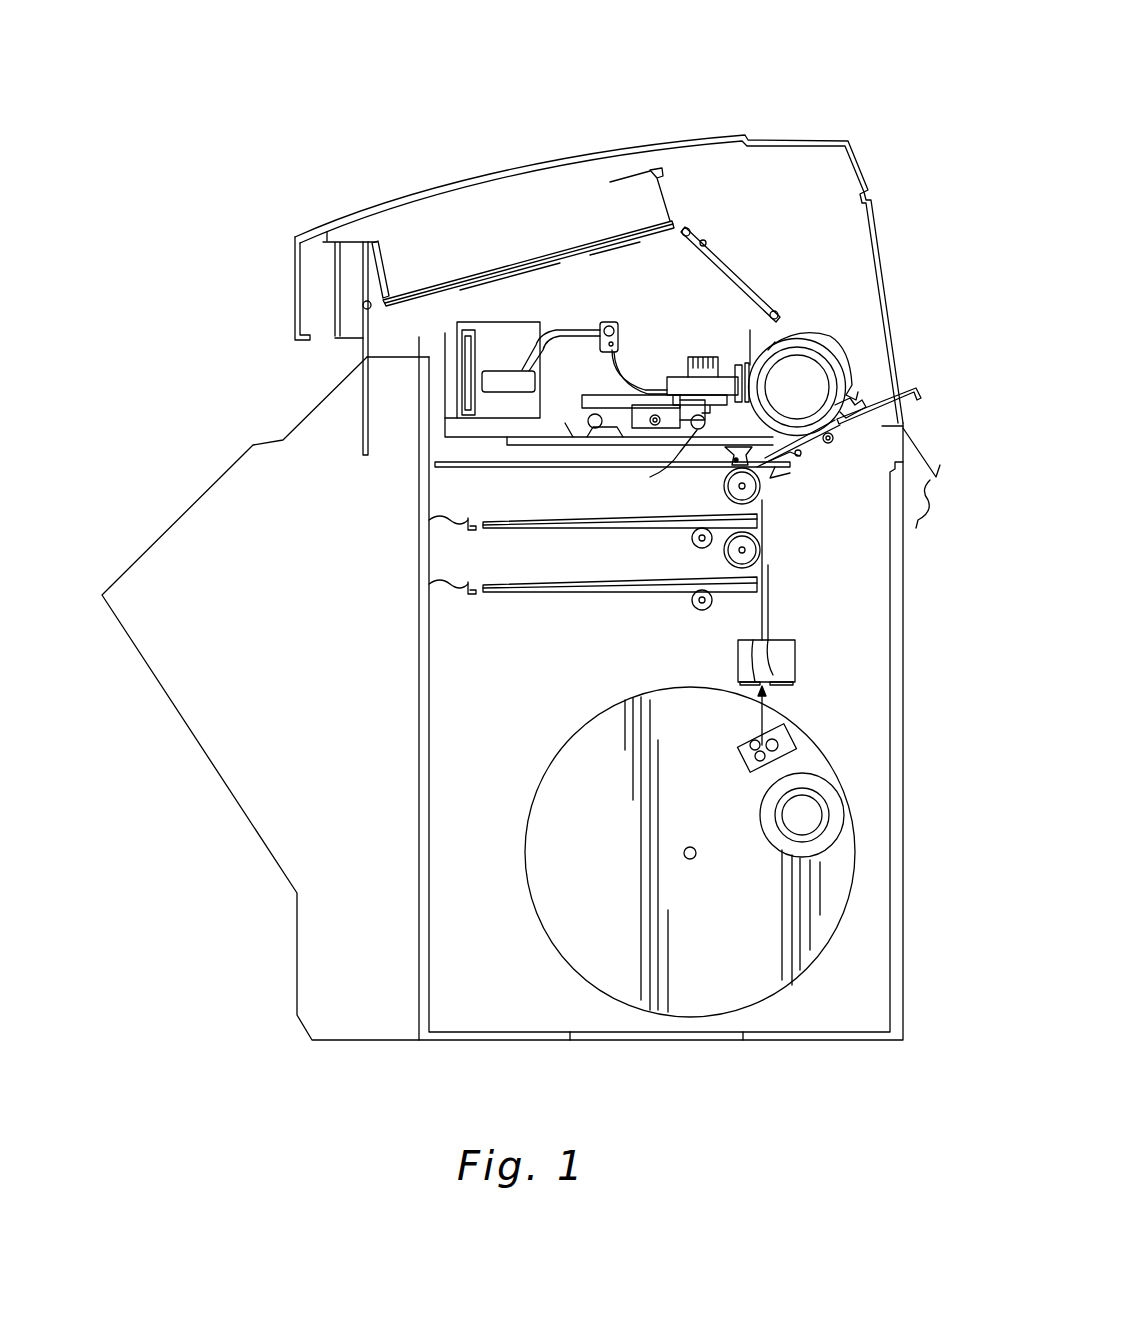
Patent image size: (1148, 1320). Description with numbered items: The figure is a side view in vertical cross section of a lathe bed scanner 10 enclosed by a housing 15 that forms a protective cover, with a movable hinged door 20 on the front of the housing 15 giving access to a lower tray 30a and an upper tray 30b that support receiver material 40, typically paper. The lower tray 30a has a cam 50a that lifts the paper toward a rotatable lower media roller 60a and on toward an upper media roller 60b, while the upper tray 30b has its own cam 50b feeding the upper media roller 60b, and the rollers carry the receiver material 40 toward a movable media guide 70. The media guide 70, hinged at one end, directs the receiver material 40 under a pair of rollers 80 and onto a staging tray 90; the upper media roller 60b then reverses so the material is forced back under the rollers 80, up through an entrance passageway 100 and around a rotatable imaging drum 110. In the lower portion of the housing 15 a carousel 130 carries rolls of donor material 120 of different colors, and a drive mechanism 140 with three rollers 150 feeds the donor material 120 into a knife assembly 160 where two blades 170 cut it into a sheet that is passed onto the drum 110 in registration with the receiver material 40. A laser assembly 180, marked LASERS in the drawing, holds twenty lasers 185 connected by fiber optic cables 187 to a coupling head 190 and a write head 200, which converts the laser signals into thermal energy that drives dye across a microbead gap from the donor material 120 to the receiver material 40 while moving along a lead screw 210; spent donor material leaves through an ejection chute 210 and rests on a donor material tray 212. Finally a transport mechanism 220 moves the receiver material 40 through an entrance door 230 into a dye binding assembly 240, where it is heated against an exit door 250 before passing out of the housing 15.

The lathe bed scanner 10 is at (548, 76).
The housing 15 is at (410, 197).
The hinged door 20 is at (232, 800).
The lower tray 30a is at (429, 584).
The upper tray 30b is at (429, 520).
The receiver material 40 is at (594, 520).
The cam 50a is at (694, 608).
The cam 50b is at (692, 540).
The lower media roller 60a is at (760, 550).
The upper media roller 60b is at (735, 492).
The media guide 70 is at (770, 470).
The rollers 80 is at (742, 441).
The staging tray 90 is at (440, 462).
The entrance passageway 100 is at (808, 438).
The imaging drum 110 is at (799, 386).
The donor material 120 is at (800, 822).
The carousel 130 is at (578, 730).
The drive mechanism 140 is at (783, 737).
The rollers 150 is at (750, 743).
The knife assembly 160 is at (796, 654).
The blades 170 is at (745, 683).
The laser assembly 180 is at (513, 298).
The lasers 185 is at (509, 370).
The fiber optic cables 187 is at (566, 330).
The coupling head 190 is at (604, 323).
The write head 200 is at (697, 354).
The lead screw 210 is at (917, 384).
The donor material tray 212 is at (929, 497).
The transport mechanism 220 is at (764, 284).
The entrance door 230 is at (663, 195).
The dye binding assembly 240 is at (487, 278).
The exit door 250 is at (387, 283).
The lasers LASERS is at (497, 387).